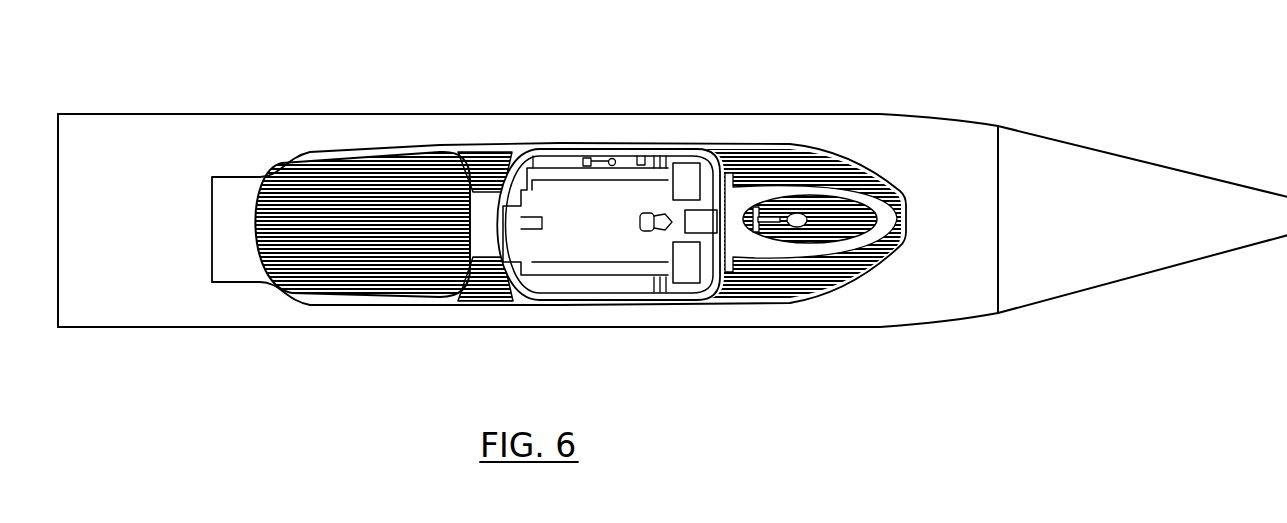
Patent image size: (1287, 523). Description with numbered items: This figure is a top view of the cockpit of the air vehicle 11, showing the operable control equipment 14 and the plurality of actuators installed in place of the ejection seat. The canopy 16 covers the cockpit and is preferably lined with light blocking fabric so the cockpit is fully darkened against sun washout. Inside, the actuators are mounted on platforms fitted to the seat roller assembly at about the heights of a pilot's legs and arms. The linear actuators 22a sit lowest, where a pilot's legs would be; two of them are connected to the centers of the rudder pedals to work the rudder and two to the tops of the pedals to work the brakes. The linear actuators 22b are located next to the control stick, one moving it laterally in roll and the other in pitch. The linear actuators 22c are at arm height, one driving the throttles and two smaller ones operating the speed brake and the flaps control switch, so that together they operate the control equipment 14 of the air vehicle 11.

The air vehicle 11 is at (122, 113).
The canopy 16 is at (341, 155).
The linear actuators 22a is at (622, 172).
The linear actuators 22b is at (572, 223).
The linear actuators 22c is at (568, 155).
The control equipment 14 is at (654, 152).